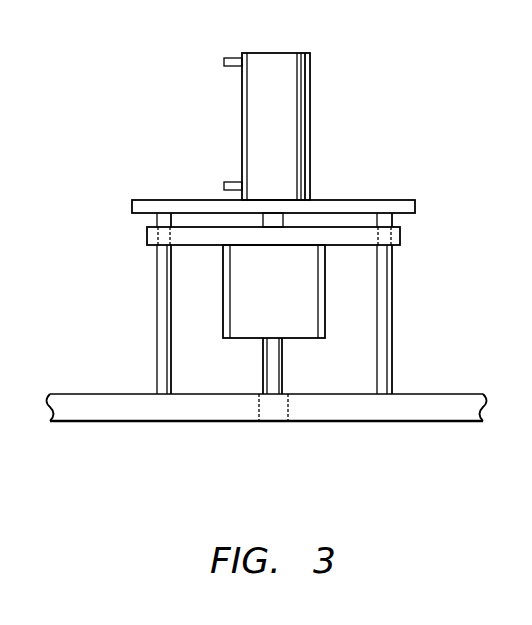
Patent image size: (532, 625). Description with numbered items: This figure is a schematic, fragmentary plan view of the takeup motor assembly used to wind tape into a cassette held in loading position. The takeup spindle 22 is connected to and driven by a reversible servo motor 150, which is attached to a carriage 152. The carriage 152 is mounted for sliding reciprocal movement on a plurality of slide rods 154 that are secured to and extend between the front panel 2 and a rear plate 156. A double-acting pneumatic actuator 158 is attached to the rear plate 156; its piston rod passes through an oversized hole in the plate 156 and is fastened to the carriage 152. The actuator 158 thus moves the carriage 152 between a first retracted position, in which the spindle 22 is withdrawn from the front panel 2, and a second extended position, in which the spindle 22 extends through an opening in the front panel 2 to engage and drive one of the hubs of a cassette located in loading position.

The front panel 2 is at (83, 422).
The takeup spindle 22 is at (283, 372).
The reversible servo motor 150 is at (287, 292).
The carriage 152 is at (401, 234).
The slide rods 154 is at (158, 297).
The rear plate 156 is at (140, 203).
The double-acting pneumatic actuator 158 is at (310, 129).